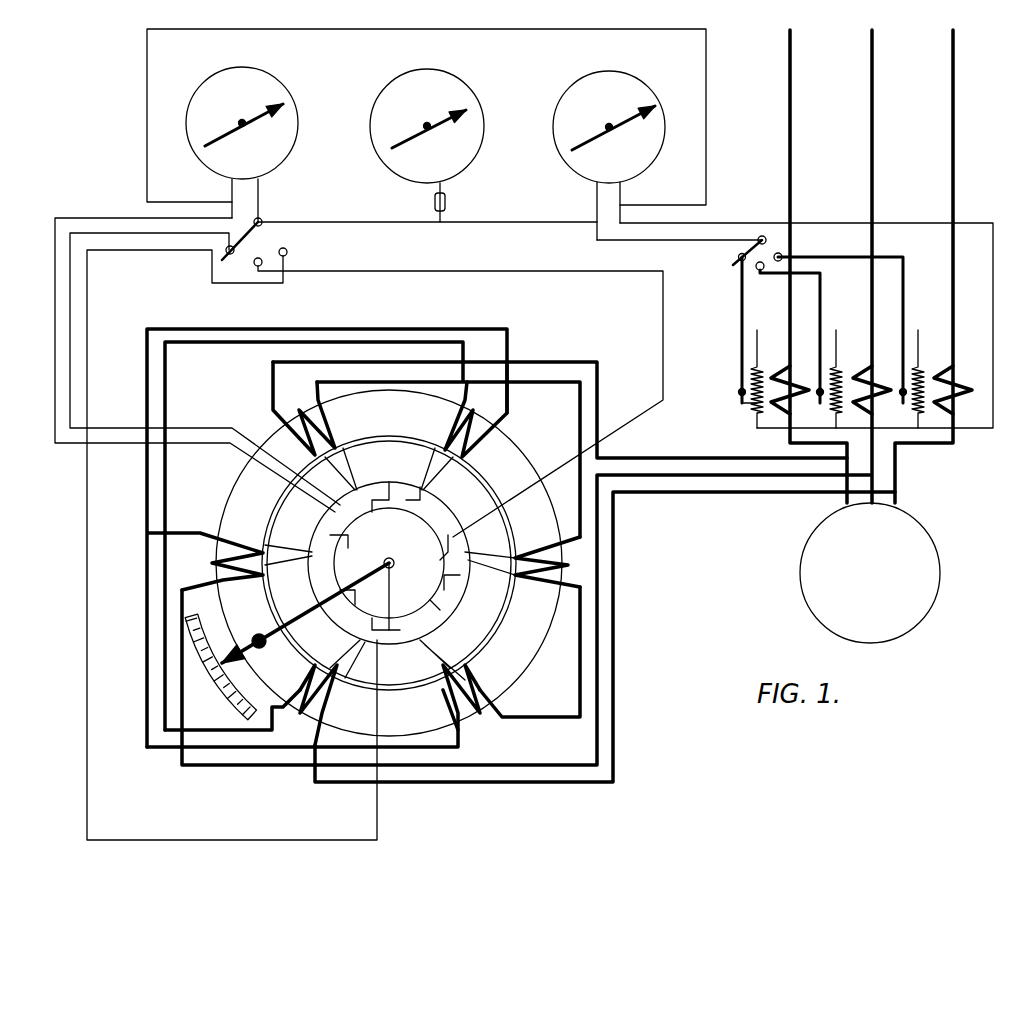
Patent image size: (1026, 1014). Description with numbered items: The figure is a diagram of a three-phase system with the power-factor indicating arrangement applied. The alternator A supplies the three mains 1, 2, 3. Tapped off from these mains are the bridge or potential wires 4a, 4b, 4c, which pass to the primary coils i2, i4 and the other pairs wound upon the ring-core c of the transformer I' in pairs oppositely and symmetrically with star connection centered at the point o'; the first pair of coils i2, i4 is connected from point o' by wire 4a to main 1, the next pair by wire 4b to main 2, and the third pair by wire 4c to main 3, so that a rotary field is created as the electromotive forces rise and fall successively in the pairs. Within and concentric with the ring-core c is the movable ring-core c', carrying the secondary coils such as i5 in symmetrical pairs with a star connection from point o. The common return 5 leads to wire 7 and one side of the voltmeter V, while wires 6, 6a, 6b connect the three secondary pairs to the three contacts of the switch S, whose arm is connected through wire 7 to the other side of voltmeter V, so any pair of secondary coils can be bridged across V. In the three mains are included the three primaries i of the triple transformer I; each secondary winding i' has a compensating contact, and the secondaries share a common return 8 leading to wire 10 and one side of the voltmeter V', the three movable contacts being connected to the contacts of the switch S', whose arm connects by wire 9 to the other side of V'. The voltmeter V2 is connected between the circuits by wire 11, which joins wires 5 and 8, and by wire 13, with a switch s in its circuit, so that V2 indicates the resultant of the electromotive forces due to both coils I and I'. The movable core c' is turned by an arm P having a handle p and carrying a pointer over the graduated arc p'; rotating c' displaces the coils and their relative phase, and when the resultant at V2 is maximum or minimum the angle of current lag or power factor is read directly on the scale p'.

The main 1 is at (818, 266).
The main 2 is at (881, 266).
The main 3 is at (933, 266).
The bridge or potential wire 4a is at (712, 458).
The bridge or potential wire 4b is at (710, 478).
The bridge or potential wire 4c is at (728, 492).
The common return wire 5 is at (124, 218).
The wire 6 is at (160, 236).
The wire 6a is at (423, 272).
The wire 6b is at (88, 360).
The wire 7 is at (232, 190).
The common return wire 8 is at (750, 223).
The wire 9 is at (630, 242).
The wire 10 is at (597, 203).
The wire 11 is at (147, 84).
The wire 13 is at (516, 222).
The voltmeter V is at (242, 123).
The voltmeter V2 is at (427, 126).
The voltmeter V' is at (609, 127).
The switch s is at (440, 202).
The switch S is at (254, 242).
The switch S' is at (803, 319).
The transformer I is at (855, 373).
The primary winding i is at (871, 377).
The secondary winding i' is at (736, 417).
The transformer I' is at (404, 538).
The alternator A is at (870, 573).
The ring-core c is at (389, 563).
The movable ring-core c' is at (389, 563).
The star point o is at (389, 563).
The star point o' is at (140, 535).
The primary coil i2 is at (470, 670).
The primary coil i4 is at (389, 445).
The secondary coil i5 is at (358, 468).
The arm P is at (305, 613).
The handle p is at (269, 652).
The graduated arc p' is at (221, 667).